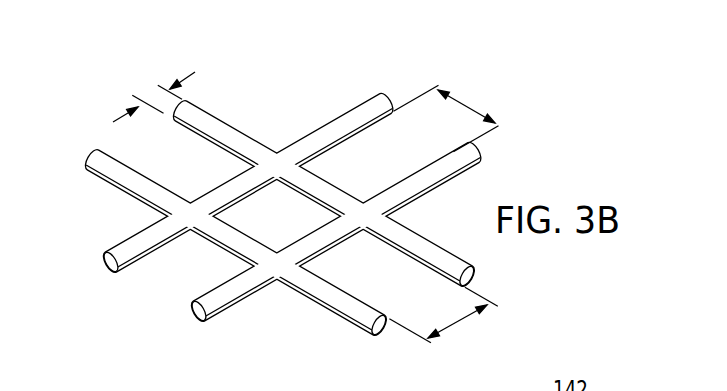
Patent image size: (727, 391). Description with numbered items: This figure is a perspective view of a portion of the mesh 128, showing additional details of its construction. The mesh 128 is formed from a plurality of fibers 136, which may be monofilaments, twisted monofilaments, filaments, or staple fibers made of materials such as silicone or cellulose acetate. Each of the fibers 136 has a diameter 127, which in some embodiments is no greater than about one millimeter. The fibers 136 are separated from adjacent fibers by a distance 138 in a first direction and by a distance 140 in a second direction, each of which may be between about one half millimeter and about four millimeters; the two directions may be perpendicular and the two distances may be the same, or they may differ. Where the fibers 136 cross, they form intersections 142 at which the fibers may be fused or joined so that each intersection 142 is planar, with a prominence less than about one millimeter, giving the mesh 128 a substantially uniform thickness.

The diameter 127 is at (181, 79).
The mesh 128 is at (300, 90).
The fibers 136 is at (230, 131).
The distance 138 is at (467, 104).
The distance 140 is at (457, 323).
The intersection 142 is at (274, 167).